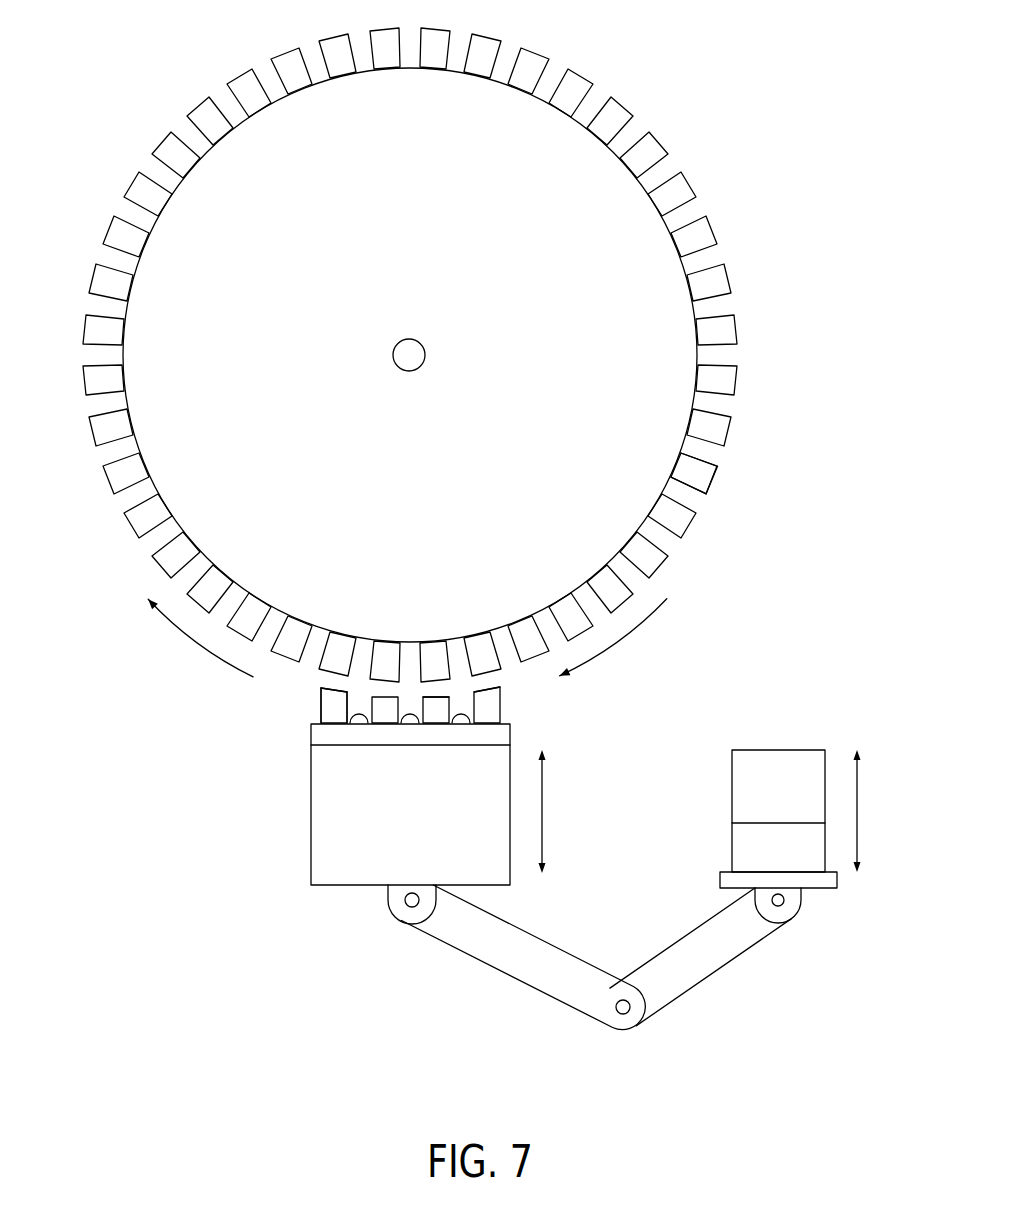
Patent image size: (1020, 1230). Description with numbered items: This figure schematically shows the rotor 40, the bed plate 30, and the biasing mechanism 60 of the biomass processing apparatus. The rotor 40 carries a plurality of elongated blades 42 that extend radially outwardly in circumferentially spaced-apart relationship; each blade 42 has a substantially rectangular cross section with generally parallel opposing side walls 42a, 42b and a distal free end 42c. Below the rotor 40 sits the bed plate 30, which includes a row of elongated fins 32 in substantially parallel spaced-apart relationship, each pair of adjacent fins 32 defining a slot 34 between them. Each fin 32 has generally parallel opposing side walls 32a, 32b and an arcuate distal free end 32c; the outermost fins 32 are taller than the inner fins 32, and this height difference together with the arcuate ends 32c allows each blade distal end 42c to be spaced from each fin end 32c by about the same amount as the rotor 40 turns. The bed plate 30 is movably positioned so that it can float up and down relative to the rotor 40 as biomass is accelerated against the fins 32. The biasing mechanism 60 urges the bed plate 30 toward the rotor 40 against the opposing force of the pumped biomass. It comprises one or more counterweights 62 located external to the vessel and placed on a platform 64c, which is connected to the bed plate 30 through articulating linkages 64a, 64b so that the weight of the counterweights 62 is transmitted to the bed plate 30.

The bed plate 30 is at (311, 843).
The fin 32 is at (321, 701).
The fin side wall 32a is at (348, 695).
The fin side wall 32b is at (318, 713).
The arcuate distal free end 32c is at (335, 688).
The slot 34 is at (360, 716).
The rotor 40 is at (588, 178).
The rotor blade 42 is at (732, 328).
The blade side wall 42a is at (712, 462).
The blade side wall 42b is at (693, 490).
The blade distal free end 42c is at (715, 480).
The biasing mechanism 60 is at (632, 921).
The counterweight 62 is at (778, 750).
The articulating linkage 64a is at (702, 977).
The articulating linkage 64b is at (530, 985).
The counterweight platform 64c is at (823, 888).